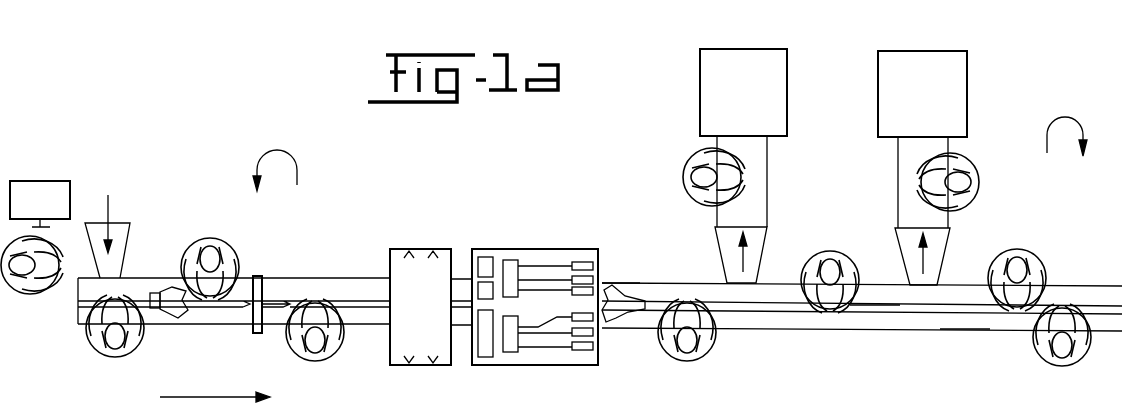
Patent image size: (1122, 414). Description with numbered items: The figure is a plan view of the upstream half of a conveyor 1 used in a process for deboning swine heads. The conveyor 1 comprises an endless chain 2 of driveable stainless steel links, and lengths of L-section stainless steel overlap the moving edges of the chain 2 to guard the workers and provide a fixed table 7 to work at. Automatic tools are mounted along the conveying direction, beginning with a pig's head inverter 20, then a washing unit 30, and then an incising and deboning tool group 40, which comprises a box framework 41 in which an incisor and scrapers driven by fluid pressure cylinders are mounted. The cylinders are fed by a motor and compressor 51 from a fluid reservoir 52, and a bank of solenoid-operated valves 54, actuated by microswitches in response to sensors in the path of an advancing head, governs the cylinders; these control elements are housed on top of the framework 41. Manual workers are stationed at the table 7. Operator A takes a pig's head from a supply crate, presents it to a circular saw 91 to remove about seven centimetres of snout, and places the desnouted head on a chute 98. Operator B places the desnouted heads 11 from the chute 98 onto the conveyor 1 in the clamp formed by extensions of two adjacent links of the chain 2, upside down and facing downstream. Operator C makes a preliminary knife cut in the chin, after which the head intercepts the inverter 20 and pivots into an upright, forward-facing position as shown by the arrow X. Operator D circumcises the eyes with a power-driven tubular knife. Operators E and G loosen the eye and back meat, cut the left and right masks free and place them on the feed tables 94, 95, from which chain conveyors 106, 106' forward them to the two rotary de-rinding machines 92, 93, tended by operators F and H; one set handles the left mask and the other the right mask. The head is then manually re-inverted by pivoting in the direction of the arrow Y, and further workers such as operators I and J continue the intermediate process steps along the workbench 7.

The conveyor 1 is at (647, 260).
The endless chain 2 is at (868, 308).
The table 7 is at (962, 329).
The pig's head 11 is at (185, 318).
The pig's head inverter 20 is at (262, 278).
The washing unit 30 is at (403, 248).
The incising and deboning tool group 40 is at (519, 305).
The box framework 41 is at (575, 365).
The motor and compressor 51 is at (488, 257).
The fluid reservoir 52 is at (478, 284).
The bank of solenoid-operated valves 54 is at (510, 352).
The circular saw 91 is at (60, 181).
The de-rinding machine 92 is at (743, 92).
The de-rinding machine 93 is at (922, 94).
The feed table 94 is at (722, 256).
The feed table 95 is at (905, 259).
The chute 98 is at (130, 237).
The chain conveyor 106 is at (763, 181).
The chain conveyor 106' is at (895, 182).
The operator A is at (22, 295).
The operator B is at (115, 357).
The operator C is at (211, 238).
The operator D is at (315, 361).
The operator E is at (687, 361).
The operator F is at (685, 176).
The operator G is at (833, 251).
The operator H is at (977, 180).
The operator I is at (1017, 249).
The operator J is at (1062, 366).
The arrow X is at (297, 168).
The arrow Y is at (1047, 140).